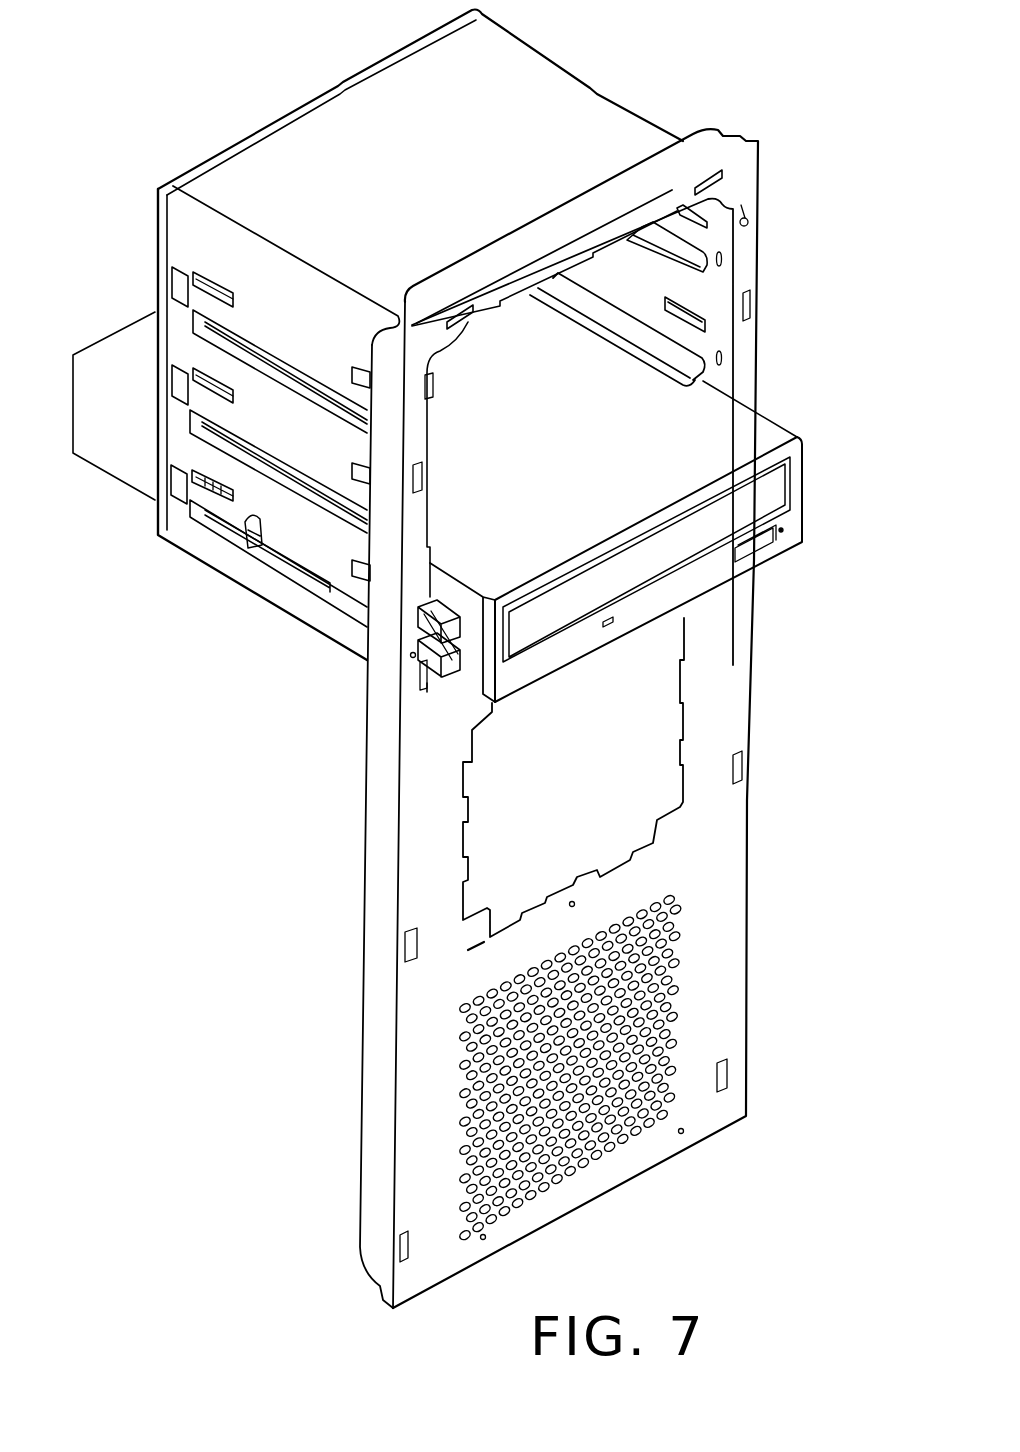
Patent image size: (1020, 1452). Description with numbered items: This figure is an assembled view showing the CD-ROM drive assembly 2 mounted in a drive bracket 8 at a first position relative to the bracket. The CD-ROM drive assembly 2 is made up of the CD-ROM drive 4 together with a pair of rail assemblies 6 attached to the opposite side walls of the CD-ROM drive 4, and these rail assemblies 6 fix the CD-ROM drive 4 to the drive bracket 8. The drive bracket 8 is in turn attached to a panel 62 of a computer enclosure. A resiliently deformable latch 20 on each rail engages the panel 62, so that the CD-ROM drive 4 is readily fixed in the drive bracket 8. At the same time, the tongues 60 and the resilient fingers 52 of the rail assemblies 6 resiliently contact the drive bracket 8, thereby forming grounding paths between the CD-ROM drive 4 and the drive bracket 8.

The CD-ROM drive assembly 2 is at (721, 447).
The CD-ROM drive 4 is at (700, 578).
The rail assembly 6 is at (438, 620).
The drive bracket 8 is at (200, 252).
The latch 20 is at (428, 655).
The resilient finger 52 is at (297, 563).
The tongue 60 is at (250, 527).
The panel 62 is at (410, 626).